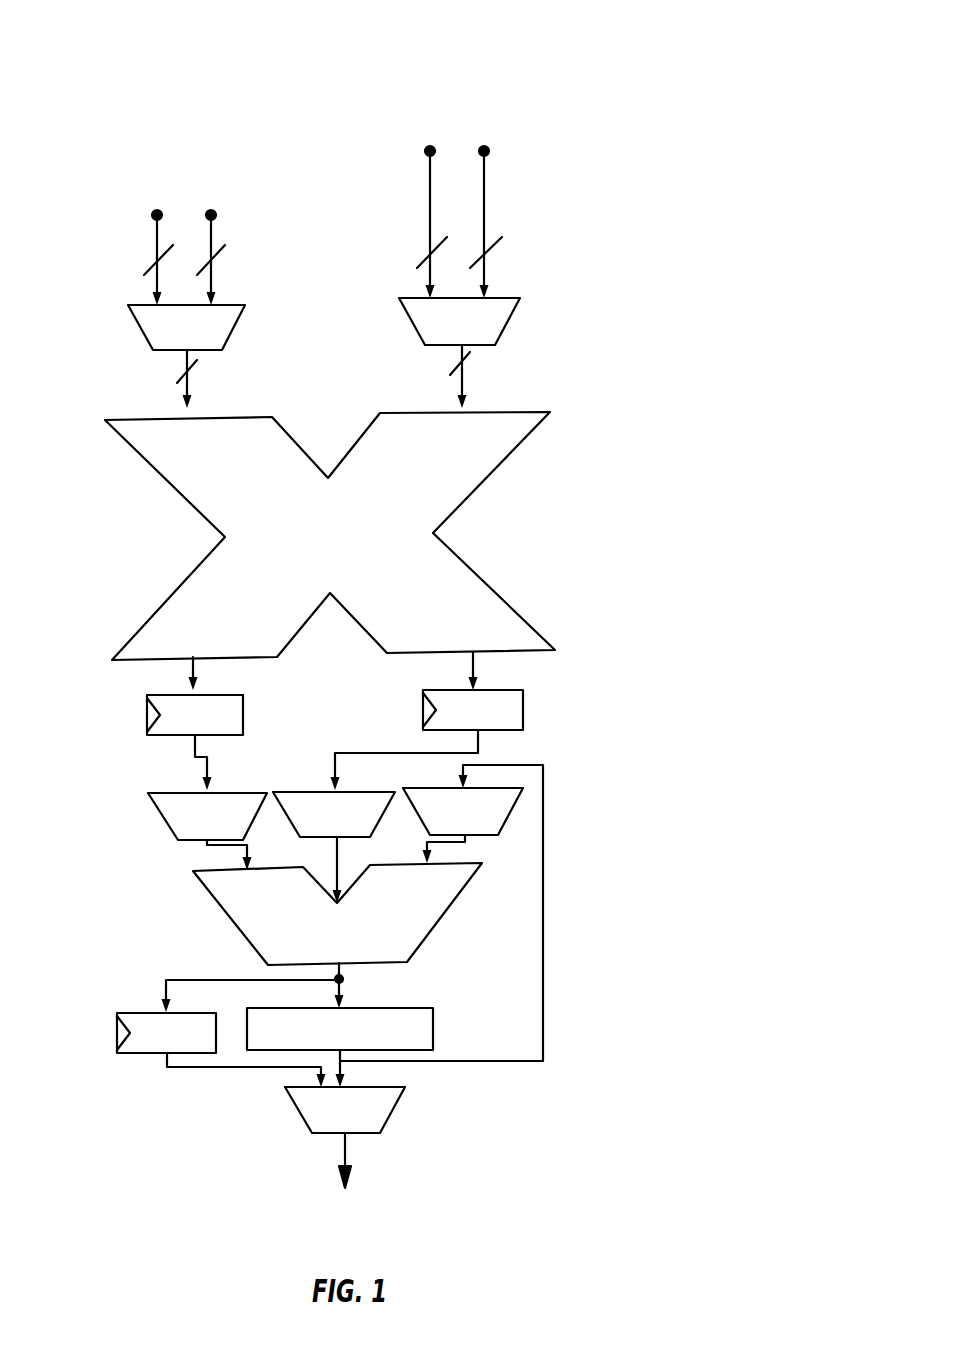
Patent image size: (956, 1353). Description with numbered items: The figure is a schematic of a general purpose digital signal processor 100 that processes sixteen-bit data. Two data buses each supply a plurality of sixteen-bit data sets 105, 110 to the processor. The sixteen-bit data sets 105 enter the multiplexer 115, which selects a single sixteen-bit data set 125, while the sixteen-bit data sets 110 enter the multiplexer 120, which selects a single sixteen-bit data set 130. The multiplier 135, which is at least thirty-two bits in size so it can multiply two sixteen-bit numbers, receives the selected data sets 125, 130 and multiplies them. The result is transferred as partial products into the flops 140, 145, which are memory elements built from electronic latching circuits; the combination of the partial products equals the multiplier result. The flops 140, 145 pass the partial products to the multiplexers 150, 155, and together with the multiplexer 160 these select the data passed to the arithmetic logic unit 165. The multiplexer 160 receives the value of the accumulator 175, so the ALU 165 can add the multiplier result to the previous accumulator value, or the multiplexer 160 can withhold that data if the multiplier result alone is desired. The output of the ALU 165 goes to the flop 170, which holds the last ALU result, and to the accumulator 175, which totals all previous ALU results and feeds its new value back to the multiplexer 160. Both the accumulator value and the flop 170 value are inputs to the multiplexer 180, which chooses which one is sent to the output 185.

The digital signal processor 100 is at (518, 68).
The 16-bit data sets 105 is at (176, 192).
The 16-bit data sets 110 is at (457, 143).
The multiplexer 115 is at (128, 310).
The multiplexer 120 is at (505, 327).
The selected 16-bit data set 125 is at (192, 387).
The selected 16-bit data set 130 is at (463, 383).
The multiplier 135 is at (495, 470).
The flop 140 is at (143, 713).
The flop 145 is at (523, 707).
The multiplexer 150 is at (160, 822).
The multiplexer 155 is at (317, 788).
The multiplexer 160 is at (513, 803).
The arithmetic logic unit 165 is at (227, 917).
The flop 170 is at (115, 1037).
The accumulator 175 is at (435, 1028).
The multiplexer 180 is at (293, 1113).
The output 185 is at (342, 1153).